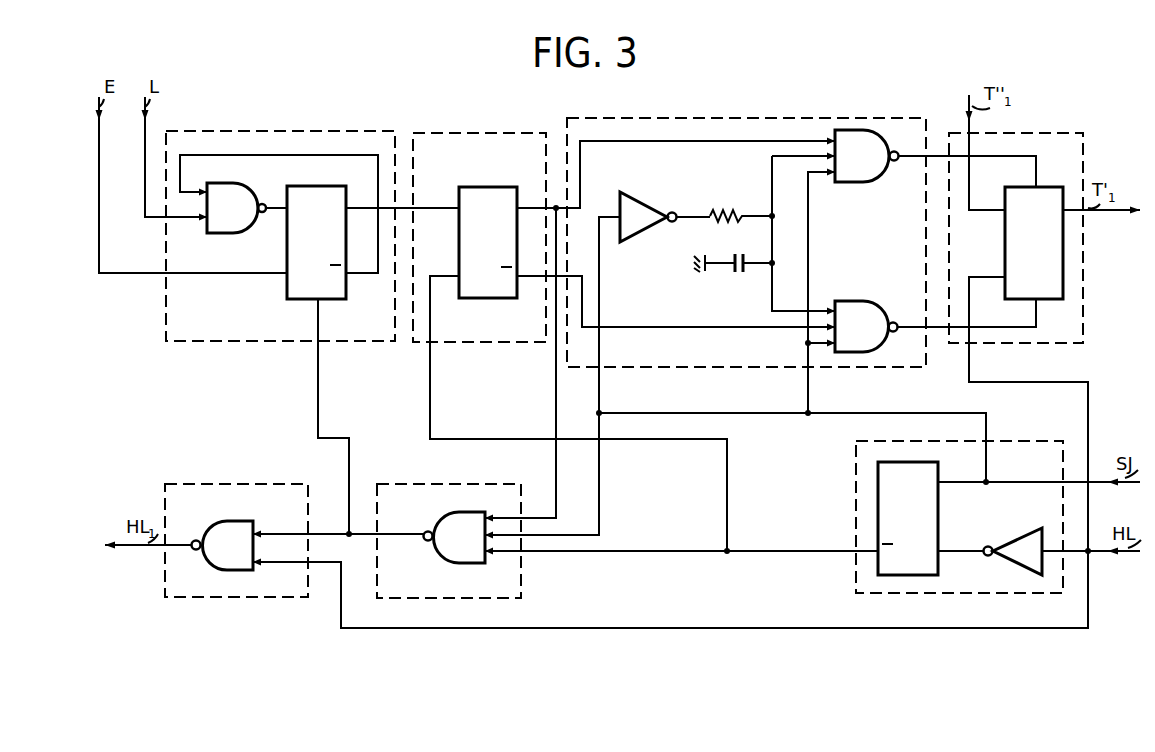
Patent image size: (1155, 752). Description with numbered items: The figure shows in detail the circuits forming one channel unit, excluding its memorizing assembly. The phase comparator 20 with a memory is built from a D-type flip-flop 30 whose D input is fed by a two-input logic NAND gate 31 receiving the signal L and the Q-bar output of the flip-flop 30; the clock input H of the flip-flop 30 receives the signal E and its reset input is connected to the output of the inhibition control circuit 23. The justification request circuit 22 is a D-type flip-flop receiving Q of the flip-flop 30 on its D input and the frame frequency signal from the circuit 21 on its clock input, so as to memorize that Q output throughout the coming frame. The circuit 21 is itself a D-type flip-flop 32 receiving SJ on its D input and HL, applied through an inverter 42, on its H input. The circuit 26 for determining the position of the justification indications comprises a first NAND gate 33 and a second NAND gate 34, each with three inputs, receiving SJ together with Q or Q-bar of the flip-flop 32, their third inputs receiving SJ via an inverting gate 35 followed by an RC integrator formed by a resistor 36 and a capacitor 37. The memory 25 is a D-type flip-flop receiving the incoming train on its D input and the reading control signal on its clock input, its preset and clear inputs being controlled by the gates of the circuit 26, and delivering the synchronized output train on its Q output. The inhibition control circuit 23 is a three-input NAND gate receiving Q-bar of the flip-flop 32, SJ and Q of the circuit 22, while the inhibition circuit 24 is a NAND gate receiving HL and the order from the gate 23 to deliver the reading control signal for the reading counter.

The phase comparator 20 is at (262, 140).
The circuit 21 is at (866, 482).
The justification request circuit 22 is at (455, 142).
The inhibition control circuit 23 is at (440, 498).
The inhibition circuit 24 is at (251, 498).
The memory 25 is at (1039, 142).
The circuit for determining the value of the position of the justification indicatio 26 is at (702, 129).
The D-type flip-flop 30 is at (298, 245).
The logic NAND gate 31 is at (237, 220).
The D-type flip-flop 32 is at (915, 526).
The first NAND gate 33 is at (852, 142).
The second NAND gate 34 is at (866, 312).
The inverting gate 35 is at (648, 222).
The resistor 36 is at (738, 204).
The capacitor 37 is at (745, 272).
The inverter 42 is at (1027, 542).